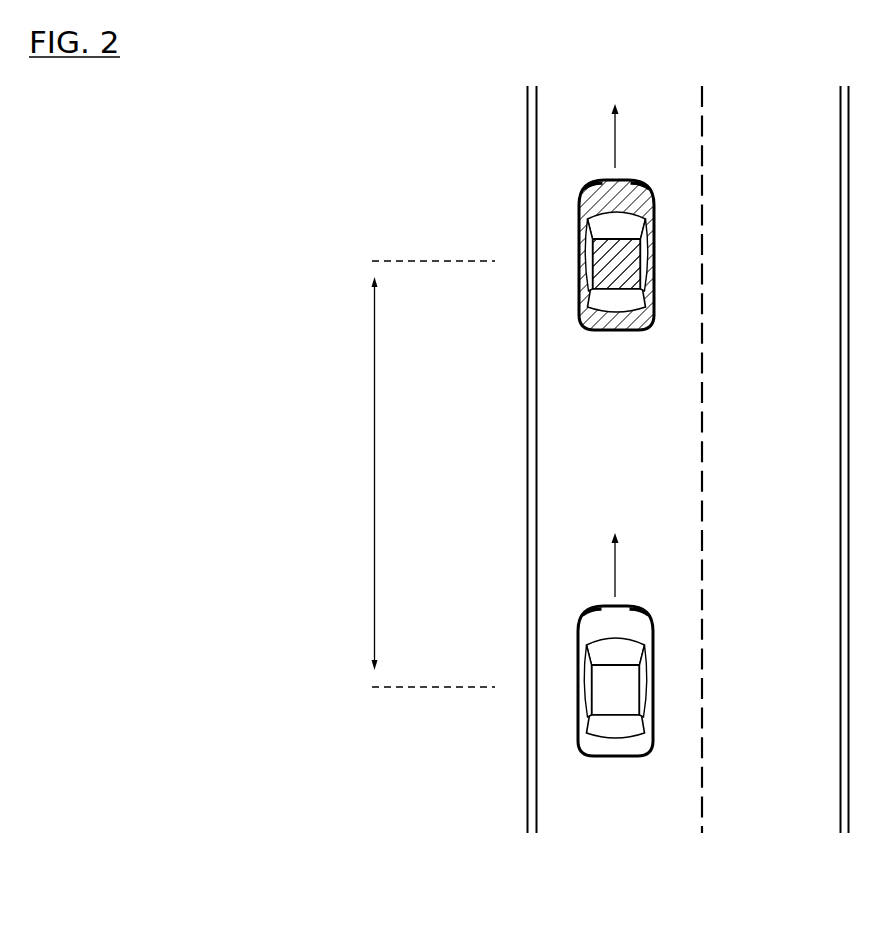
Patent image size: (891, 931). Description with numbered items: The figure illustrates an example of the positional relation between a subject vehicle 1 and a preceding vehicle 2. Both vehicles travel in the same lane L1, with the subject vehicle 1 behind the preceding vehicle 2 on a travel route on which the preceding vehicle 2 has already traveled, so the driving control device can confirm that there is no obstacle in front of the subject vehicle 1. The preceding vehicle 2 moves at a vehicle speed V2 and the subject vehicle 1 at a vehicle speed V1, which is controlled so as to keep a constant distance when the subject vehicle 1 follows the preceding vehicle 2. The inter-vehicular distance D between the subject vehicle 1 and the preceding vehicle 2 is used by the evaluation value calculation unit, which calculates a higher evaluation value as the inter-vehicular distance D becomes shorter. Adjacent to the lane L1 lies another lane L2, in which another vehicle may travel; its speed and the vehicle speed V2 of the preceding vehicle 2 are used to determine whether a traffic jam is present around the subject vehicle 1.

The subject vehicle 1 is at (580, 647).
The preceding vehicle 2 is at (578, 268).
The lane L1 is at (625, 809).
The another lane L2 is at (782, 813).
The vehicle speed of the subject vehicle V1 is at (639, 565).
The vehicle speed of the preceding vehicle V2 is at (637, 136).
The inter-vehicular distance D is at (418, 474).